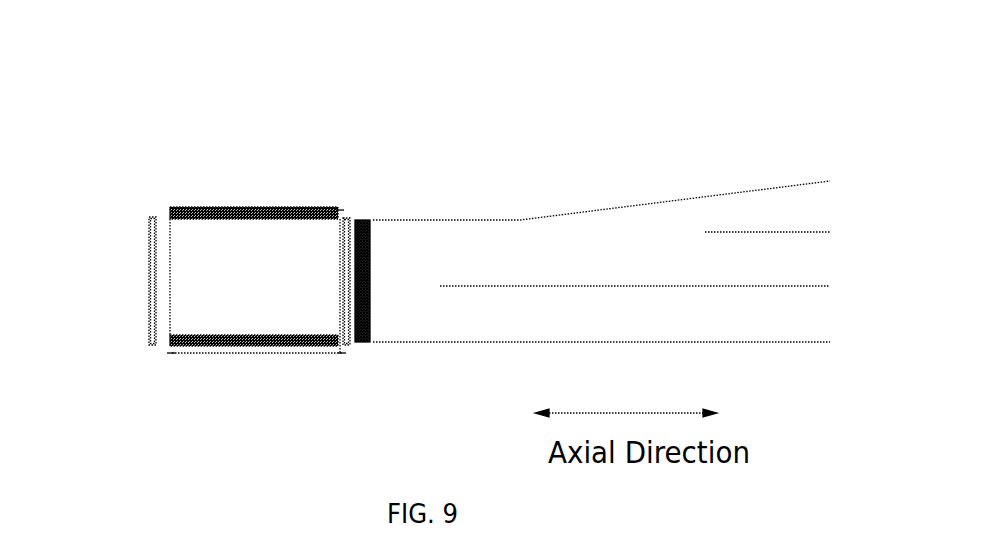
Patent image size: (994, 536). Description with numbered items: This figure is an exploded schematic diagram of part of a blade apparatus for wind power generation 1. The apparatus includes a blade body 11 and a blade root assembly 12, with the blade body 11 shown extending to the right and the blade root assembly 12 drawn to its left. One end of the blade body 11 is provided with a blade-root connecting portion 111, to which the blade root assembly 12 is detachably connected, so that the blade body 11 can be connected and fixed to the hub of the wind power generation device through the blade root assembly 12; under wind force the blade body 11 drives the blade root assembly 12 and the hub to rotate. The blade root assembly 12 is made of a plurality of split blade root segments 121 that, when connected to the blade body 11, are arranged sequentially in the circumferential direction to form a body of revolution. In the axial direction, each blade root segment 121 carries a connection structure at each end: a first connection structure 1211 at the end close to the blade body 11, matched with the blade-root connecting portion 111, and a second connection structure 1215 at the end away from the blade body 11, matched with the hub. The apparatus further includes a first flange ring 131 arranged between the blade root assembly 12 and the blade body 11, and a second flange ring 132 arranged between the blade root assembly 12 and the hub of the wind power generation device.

The blade apparatus for wind power generation 1 is at (262, 72).
The blade body 11 is at (522, 222).
The blade-root connecting portion 111 is at (362, 218).
The blade root assembly 12 is at (258, 220).
The blade root segment 121 is at (247, 348).
The first connection structure 1211 is at (338, 210).
The second connection structure 1215 is at (167, 212).
The first flange ring 131 is at (350, 323).
The second flange ring 132 is at (150, 272).